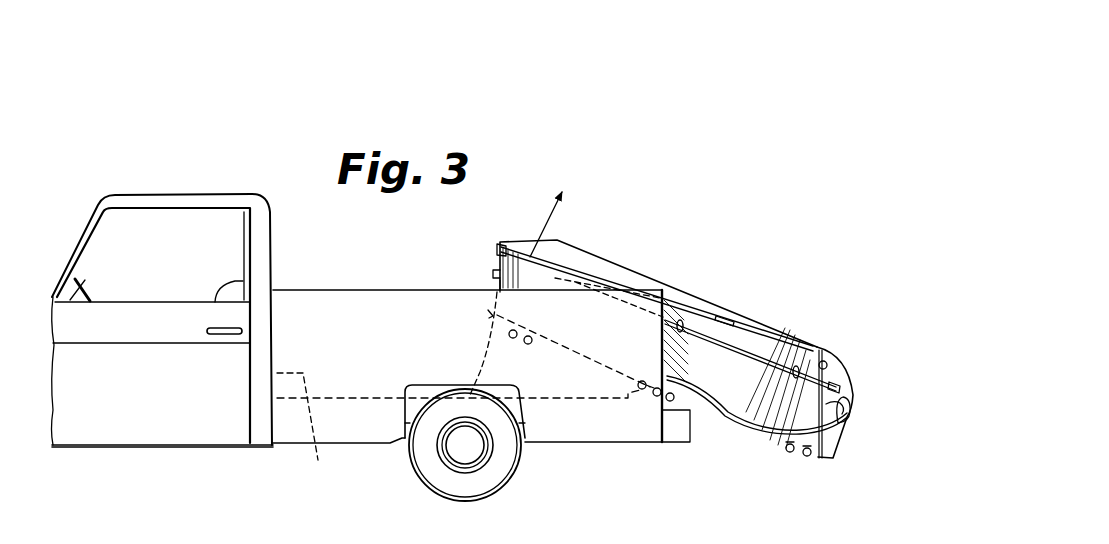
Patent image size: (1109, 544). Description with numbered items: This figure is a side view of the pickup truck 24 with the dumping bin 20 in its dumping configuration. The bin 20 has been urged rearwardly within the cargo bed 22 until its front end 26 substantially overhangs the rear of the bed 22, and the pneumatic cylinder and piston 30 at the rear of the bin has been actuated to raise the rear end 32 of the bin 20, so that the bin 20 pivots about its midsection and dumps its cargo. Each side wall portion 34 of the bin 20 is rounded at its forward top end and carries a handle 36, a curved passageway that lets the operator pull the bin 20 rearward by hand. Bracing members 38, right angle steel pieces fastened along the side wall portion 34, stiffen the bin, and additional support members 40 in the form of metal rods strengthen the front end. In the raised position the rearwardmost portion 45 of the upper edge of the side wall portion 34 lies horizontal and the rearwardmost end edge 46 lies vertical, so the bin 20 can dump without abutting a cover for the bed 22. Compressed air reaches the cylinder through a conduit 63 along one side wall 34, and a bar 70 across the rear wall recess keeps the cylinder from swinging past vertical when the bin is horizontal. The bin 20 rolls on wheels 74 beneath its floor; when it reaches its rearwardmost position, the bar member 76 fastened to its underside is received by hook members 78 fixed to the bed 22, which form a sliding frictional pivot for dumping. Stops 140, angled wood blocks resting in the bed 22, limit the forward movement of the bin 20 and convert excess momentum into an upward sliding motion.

The dumping bin 20 is at (701, 285).
The cargo bed 22 is at (335, 288).
The pickup truck 24 is at (179, 188).
The front end of the bin 26 is at (853, 358).
The pneumatic cylinder and piston 30 is at (478, 358).
The rear end of the bin 32 is at (517, 233).
The side wall portion 34 is at (742, 410).
The handle 36 is at (852, 413).
The bracing member 38 is at (718, 318).
The additional support member 40 is at (822, 408).
The rearwardmost portion of the upper edge of the side wall portion 45 is at (512, 238).
The rearwardmost end edge of the side wall portion 46 is at (497, 285).
The conduit 63 is at (740, 347).
The bar 70 is at (491, 272).
The wheels 74 is at (795, 453).
The bar member 76 is at (655, 400).
The hook members 78 is at (640, 397).
The stops 140 is at (307, 443).